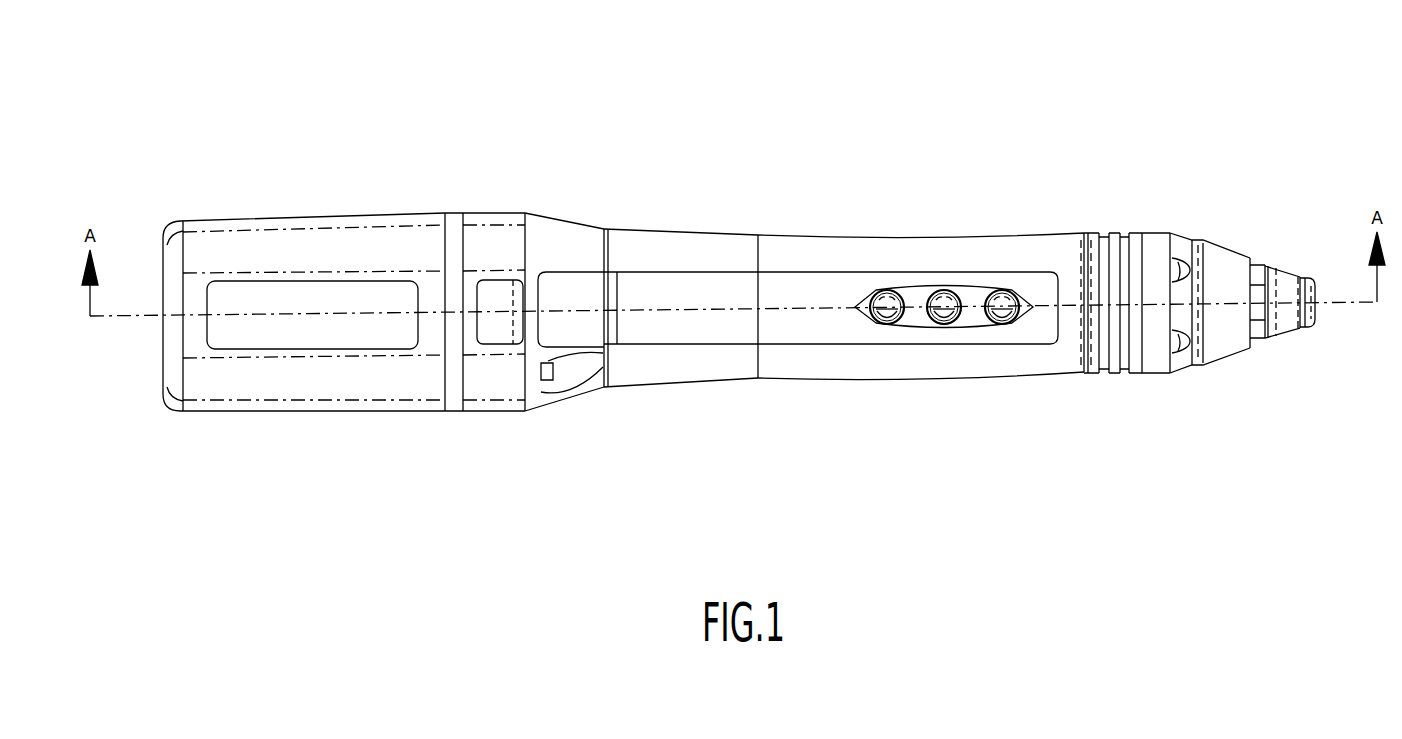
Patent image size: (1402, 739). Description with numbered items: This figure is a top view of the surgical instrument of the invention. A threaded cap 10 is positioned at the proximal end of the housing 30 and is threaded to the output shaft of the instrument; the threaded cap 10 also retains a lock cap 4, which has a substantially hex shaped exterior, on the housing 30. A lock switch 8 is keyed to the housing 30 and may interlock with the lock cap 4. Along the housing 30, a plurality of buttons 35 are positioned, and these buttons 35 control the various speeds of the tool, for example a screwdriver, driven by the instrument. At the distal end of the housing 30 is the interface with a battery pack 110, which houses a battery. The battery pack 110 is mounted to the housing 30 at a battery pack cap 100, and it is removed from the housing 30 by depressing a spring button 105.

The lock cap 4 is at (1285, 283).
The lock switch 8 is at (1223, 270).
The threaded cap 10 is at (1307, 322).
The housing 30 is at (784, 242).
The buttons 35 is at (947, 297).
The battery pack cap 100 is at (567, 218).
The spring button 105 is at (494, 303).
The battery pack 110 is at (495, 375).